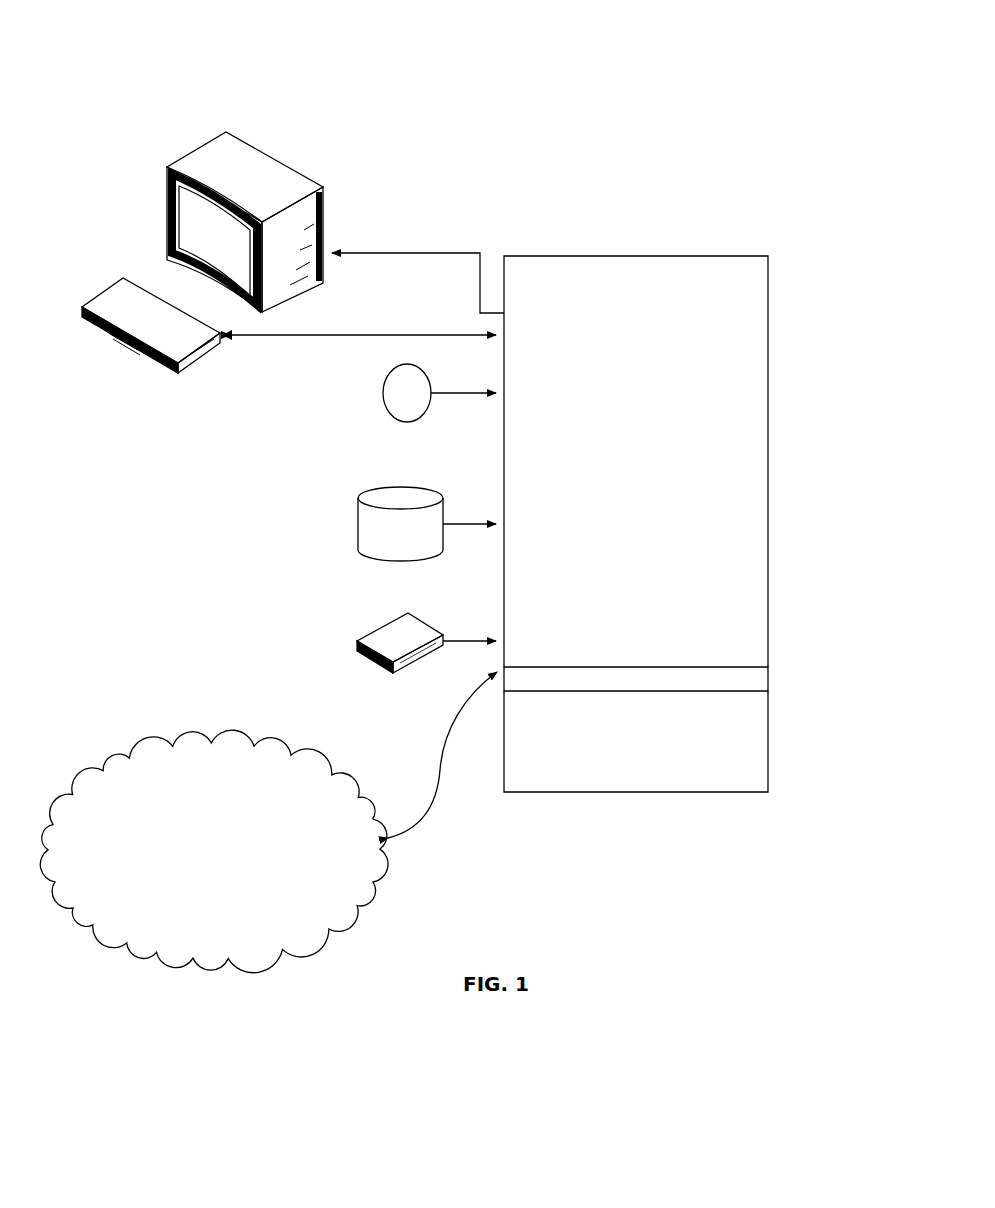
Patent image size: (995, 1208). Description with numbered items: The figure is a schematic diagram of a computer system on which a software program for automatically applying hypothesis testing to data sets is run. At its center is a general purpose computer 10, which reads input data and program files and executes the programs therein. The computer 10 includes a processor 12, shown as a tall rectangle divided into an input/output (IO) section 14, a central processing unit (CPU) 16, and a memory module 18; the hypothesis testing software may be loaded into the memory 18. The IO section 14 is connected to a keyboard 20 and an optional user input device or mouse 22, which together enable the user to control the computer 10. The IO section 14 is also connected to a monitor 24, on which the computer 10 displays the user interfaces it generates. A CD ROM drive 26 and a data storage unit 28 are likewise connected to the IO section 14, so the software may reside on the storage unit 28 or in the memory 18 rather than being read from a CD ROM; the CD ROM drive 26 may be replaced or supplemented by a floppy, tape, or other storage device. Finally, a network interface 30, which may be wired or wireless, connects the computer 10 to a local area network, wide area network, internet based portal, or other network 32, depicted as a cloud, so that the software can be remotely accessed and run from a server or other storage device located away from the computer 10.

The general purpose computer 10 is at (468, 66).
The processor 12 is at (639, 248).
The input/output (IO) section 14 is at (768, 314).
The central processing unit (CPU) 16 is at (768, 681).
The memory module 18 is at (768, 739).
The keyboard 20 is at (107, 282).
The mouse 22 is at (383, 393).
The monitor 24 is at (166, 166).
The CD ROM drive 26 is at (357, 641).
The data storage unit 28 is at (358, 524).
The network interface 30 is at (438, 778).
The network 32 is at (200, 935).